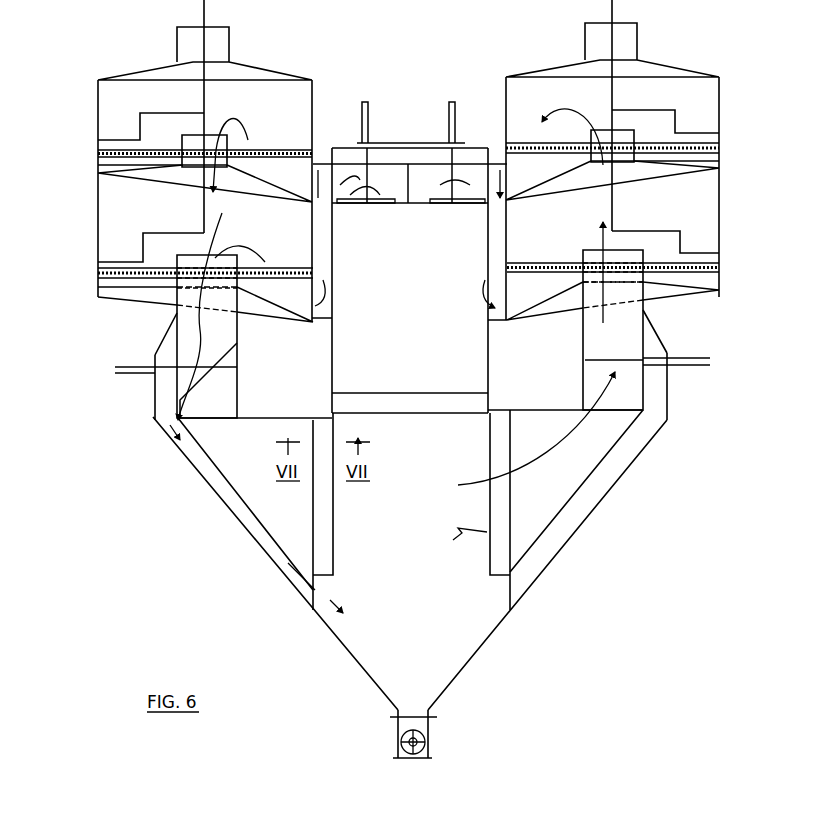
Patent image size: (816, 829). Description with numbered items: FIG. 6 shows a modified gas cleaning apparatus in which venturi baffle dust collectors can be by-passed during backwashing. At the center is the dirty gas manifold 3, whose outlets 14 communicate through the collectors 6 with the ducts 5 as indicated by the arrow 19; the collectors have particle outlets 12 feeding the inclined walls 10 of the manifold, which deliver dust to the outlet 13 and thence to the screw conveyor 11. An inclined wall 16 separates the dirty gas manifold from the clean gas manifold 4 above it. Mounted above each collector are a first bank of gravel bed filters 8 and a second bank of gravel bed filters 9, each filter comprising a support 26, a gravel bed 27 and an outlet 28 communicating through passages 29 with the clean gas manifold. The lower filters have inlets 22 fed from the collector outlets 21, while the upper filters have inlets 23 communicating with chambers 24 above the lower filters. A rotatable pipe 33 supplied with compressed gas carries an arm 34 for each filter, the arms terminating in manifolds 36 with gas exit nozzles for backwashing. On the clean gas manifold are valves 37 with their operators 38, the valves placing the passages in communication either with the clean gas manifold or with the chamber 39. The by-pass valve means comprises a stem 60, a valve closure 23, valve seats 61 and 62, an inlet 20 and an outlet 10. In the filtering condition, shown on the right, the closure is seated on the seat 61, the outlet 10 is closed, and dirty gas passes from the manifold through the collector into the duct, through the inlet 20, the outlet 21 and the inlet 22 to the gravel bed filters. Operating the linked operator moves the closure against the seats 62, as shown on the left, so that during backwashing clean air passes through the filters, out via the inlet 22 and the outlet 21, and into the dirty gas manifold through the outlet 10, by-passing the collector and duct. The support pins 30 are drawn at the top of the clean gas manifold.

The dirty gas manifold 3 is at (411, 510).
The clean gas manifold 4 is at (410, 280).
The duct 5 is at (427, 456).
The first bank of venturi baffle dust collectors 6 is at (332, 558).
The first bank of gravel bed filters 8 is at (719, 225).
The second bank of gravel bed filters 9 is at (98, 222).
The outlet 10 is at (297, 591).
The screw conveyor 11 is at (440, 742).
The particle outlets 12 is at (328, 577).
The outlet 13 is at (405, 706).
The outlets 14 is at (335, 497).
The wall 16 is at (410, 403).
The arrow 19 is at (620, 480).
The inlet 20 is at (170, 324).
The outlets 21 is at (232, 406).
The inlets 22 is at (237, 328).
The valve closure 23 is at (222, 366).
The chambers 24 is at (226, 314).
The support 26 is at (110, 160).
The gravel bed 27 is at (98, 152).
The outlet 28 is at (316, 206).
The passages 29 is at (382, 205).
The support pins 30 is at (445, 134).
The pipe 33 is at (205, 97).
The arm 34 is at (152, 113).
The manifolds 36 is at (150, 140).
The valves 37 is at (382, 198).
The operators 38 is at (115, 370).
The chamber 39 is at (410, 155).
The stem 60 is at (167, 368).
The valve seat 61 is at (237, 343).
The valve seats 62 is at (177, 312).